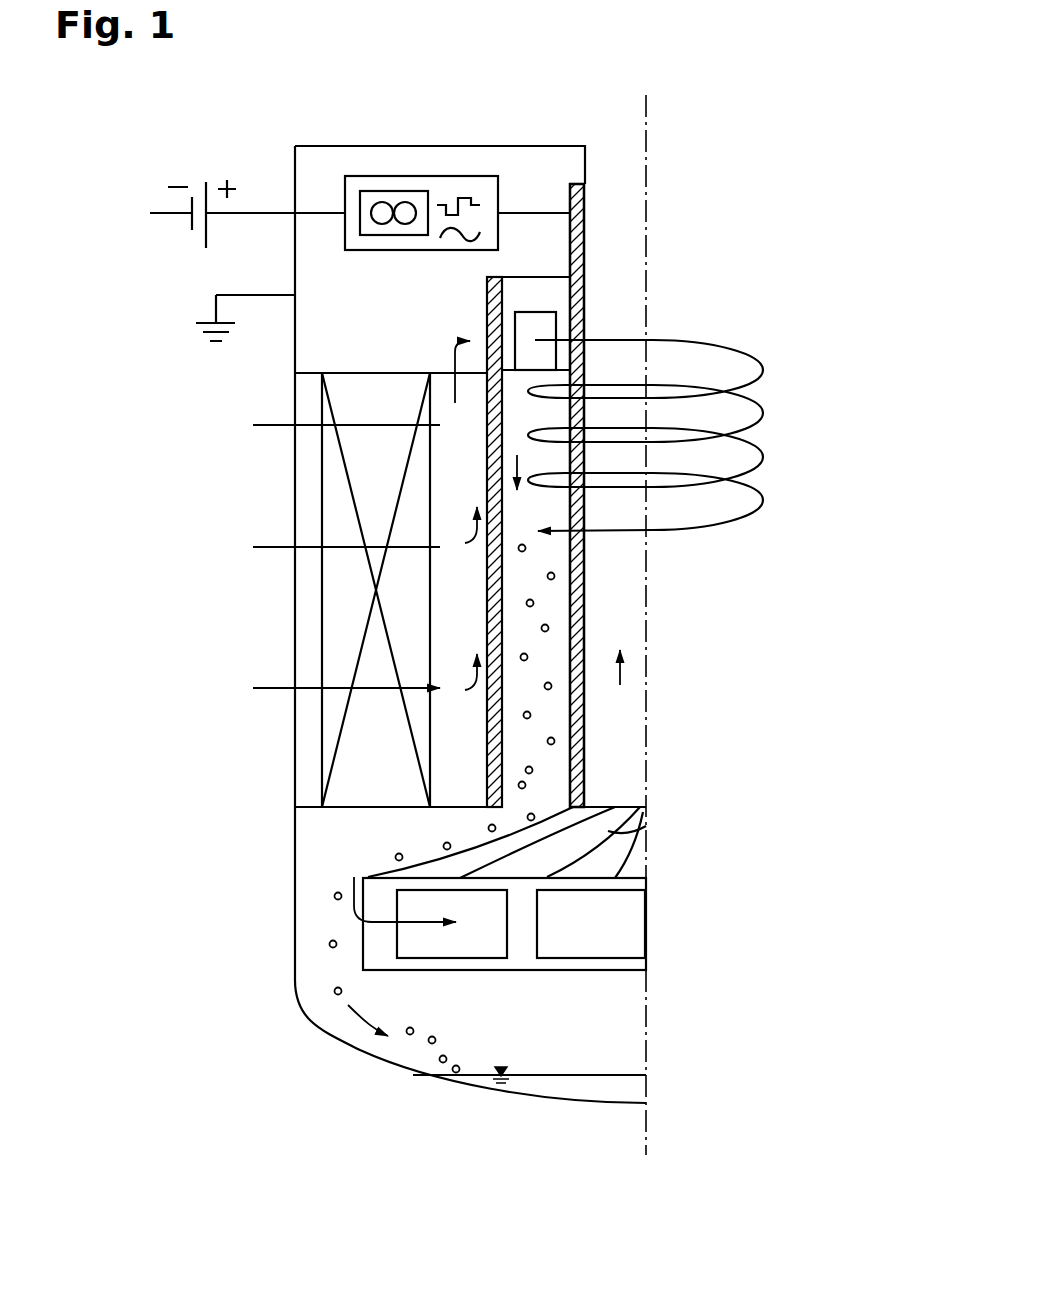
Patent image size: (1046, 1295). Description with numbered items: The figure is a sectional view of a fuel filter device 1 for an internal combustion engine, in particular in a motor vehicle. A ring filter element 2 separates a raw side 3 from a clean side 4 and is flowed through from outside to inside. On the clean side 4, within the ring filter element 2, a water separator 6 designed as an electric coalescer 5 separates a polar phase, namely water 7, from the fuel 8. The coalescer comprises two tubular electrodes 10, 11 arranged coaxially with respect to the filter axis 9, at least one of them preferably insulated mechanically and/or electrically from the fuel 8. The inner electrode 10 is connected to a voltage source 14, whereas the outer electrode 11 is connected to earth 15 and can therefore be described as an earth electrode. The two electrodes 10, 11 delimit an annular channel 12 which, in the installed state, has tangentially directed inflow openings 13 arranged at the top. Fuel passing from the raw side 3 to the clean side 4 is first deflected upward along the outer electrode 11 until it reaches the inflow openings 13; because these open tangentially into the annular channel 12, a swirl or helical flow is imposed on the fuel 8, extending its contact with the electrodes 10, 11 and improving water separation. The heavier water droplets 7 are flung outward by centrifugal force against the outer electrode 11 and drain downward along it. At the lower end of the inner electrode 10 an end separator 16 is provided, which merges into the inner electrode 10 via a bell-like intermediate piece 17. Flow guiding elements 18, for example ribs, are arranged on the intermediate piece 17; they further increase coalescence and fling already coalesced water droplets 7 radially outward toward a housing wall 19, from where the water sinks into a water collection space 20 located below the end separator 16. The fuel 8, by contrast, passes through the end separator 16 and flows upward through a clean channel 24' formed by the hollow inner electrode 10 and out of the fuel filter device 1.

The fuel filter device 1 is at (690, 113).
The ring filter element 2 is at (345, 622).
The raw side 3 is at (250, 490).
The clean side 4 is at (468, 476).
The electric coalescer 5 is at (597, 562).
The water separator 6 is at (577, 495).
The water 7 is at (428, 1043).
The fuel 8 is at (268, 690).
The filter axis 9 is at (646, 200).
The inner electrode 10 is at (575, 247).
The outer electrode 11 is at (525, 605).
The annular channel 12 is at (547, 740).
The inflow openings 13 is at (535, 330).
The voltage source 14 is at (192, 221).
The earth 15 is at (208, 322).
The end separator 16 is at (613, 930).
The intermediate piece 17 is at (638, 857).
The flow guiding elements 18 is at (646, 824).
The housing wall 19 is at (295, 898).
The water collection space 20 is at (613, 1054).
The clean channel 24' is at (645, 406).